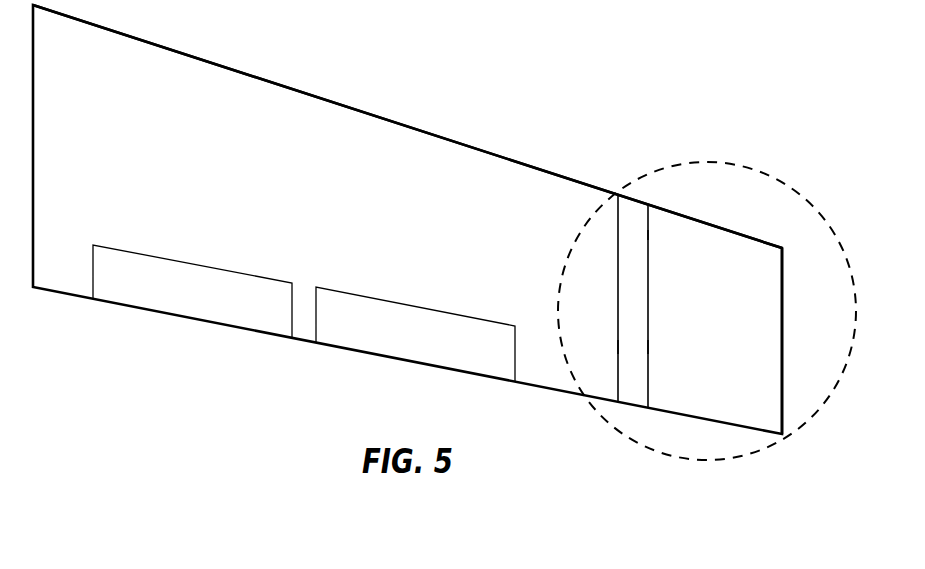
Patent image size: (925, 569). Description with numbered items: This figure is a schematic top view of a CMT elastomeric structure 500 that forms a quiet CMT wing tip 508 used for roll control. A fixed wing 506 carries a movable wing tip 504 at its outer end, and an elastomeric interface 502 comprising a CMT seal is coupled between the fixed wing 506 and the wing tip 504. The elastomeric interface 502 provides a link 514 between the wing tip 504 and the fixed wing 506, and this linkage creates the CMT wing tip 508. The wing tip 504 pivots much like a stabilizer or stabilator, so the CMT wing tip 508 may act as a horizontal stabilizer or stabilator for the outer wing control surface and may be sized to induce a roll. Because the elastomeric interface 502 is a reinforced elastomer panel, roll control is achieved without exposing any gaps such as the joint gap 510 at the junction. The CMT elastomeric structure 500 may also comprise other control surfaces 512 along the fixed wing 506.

The CMT elastomeric structure 500 is at (652, 24).
The elastomeric interface 502 is at (633, 388).
The wing tip 504 is at (717, 260).
The fixed wing 506 is at (240, 71).
The CMT wing tip 508 is at (717, 186).
The joint gap 510 is at (590, 347).
The other control surfaces 512 is at (138, 250).
The link 514 is at (649, 235).